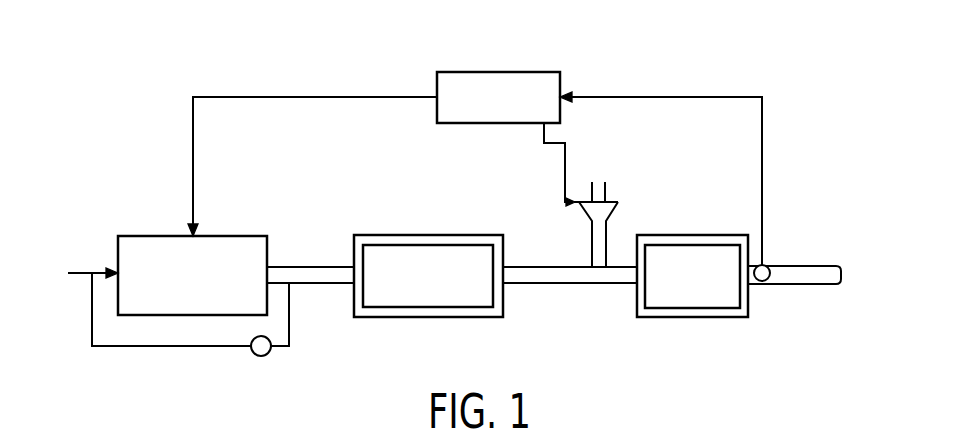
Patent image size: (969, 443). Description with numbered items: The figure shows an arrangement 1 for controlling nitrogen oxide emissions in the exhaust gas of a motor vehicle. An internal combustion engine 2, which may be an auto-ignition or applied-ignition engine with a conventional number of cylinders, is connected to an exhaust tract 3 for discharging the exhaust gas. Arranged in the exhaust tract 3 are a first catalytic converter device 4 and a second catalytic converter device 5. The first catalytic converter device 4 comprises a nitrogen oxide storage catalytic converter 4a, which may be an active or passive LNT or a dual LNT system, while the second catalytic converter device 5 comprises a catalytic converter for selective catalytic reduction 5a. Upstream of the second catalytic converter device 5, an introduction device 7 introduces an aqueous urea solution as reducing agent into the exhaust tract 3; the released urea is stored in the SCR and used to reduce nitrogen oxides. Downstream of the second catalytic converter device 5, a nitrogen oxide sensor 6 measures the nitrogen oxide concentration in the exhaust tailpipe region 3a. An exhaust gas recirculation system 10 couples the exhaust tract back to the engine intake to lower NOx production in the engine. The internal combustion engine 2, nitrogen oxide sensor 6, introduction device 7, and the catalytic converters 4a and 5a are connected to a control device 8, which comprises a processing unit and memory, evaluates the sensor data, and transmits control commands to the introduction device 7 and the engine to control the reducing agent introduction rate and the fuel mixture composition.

The arrangement 1 is at (186, 363).
The internal combustion engine 2 is at (150, 258).
The exhaust tract 3 is at (302, 272).
The exhaust tailpipe region 3a is at (820, 277).
The first catalytic converter device 4 is at (395, 312).
The nitrogen oxide storage catalytic converter 4a is at (450, 282).
The second catalytic converter device 5 is at (663, 312).
The catalytic converter for selective catalytic reduction 5a is at (718, 280).
The nitrogen oxide sensor 6 is at (768, 267).
The introduction device 7 is at (598, 210).
The control device 8 is at (497, 98).
The exhaust gas recirculation system 10 is at (257, 377).